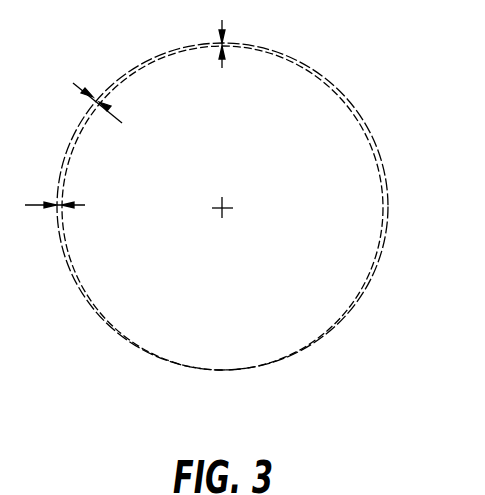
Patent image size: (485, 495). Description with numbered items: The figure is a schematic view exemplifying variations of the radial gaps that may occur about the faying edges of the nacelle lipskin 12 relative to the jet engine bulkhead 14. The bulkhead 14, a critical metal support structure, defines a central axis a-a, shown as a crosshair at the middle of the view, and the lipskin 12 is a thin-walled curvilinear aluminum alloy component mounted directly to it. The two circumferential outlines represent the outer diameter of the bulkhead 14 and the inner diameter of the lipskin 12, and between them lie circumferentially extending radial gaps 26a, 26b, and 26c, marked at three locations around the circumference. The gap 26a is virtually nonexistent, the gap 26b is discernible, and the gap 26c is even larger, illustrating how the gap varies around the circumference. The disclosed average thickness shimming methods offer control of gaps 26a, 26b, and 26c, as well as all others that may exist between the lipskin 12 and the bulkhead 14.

The nacelle lipskin 12 is at (388, 192).
The jet engine bulkhead 14 is at (370, 138).
The radial gap 26a is at (222, 60).
The radial gap 26b is at (113, 110).
The radial gap 26c is at (71, 206).
The axis a-a is at (233, 220).